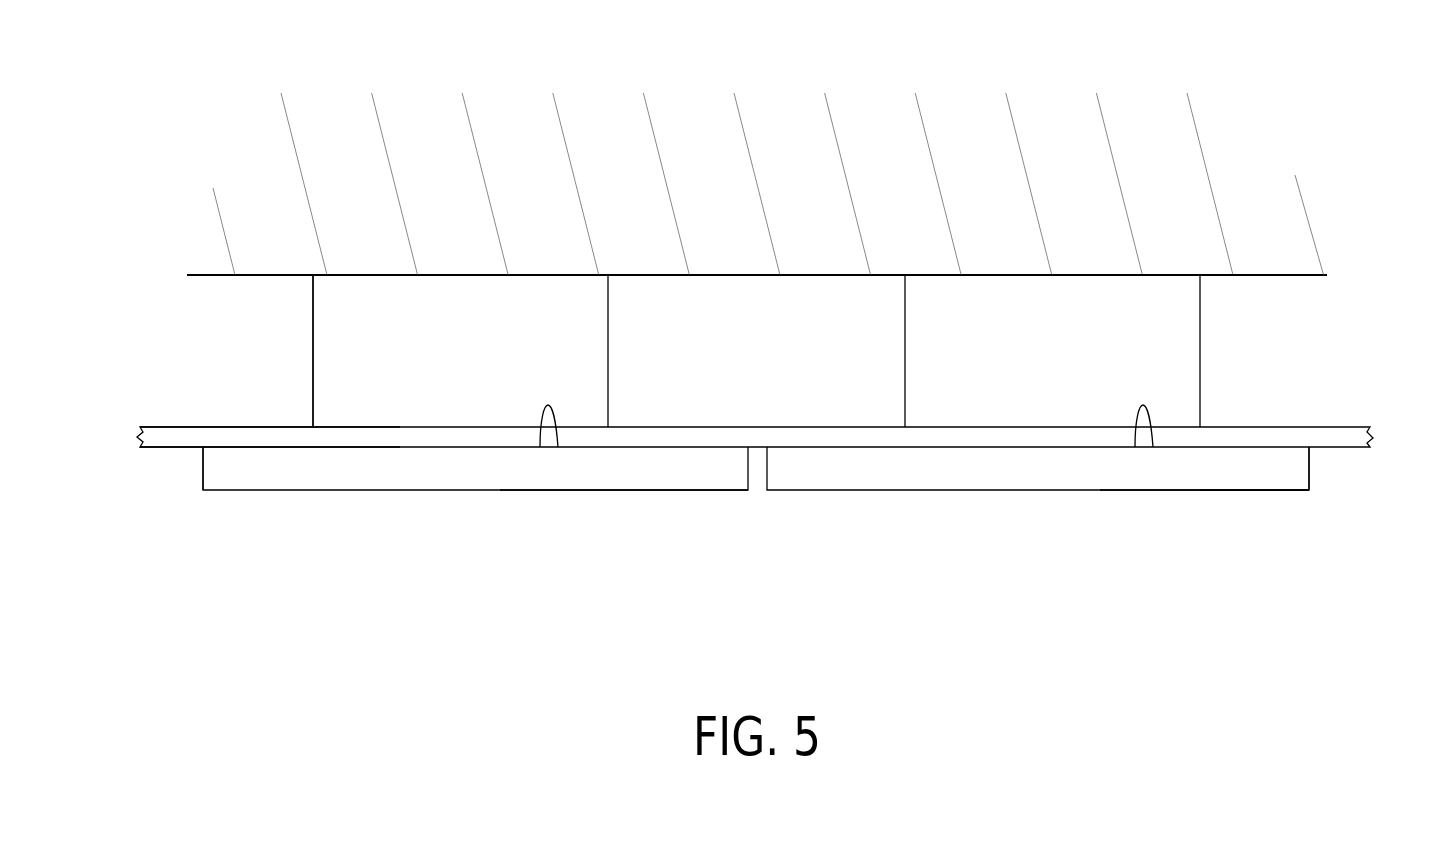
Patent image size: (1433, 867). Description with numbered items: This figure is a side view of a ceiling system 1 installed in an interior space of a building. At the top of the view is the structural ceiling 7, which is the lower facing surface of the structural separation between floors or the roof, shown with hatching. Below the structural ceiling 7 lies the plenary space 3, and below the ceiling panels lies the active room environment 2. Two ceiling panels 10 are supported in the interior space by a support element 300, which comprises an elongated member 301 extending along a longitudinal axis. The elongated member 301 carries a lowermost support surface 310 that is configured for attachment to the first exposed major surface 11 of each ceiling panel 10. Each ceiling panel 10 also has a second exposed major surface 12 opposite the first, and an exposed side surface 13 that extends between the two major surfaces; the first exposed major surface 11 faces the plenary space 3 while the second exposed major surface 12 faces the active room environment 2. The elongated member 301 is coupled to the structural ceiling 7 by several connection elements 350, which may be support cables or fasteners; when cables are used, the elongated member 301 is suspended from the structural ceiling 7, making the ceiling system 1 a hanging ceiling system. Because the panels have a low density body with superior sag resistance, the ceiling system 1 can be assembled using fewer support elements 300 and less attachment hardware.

The ceiling system 1 is at (1388, 187).
The active room environment 2 is at (1365, 555).
The plenary space 3 is at (1342, 364).
The structural ceiling 7 is at (1170, 277).
The ceiling panel 10 is at (302, 483).
The first exposed major surface 11 is at (558, 447).
The second exposed major surface 12 is at (657, 491).
The exposed side surface 13 is at (202, 467).
The support element 300 is at (208, 429).
The elongated member 301 is at (151, 430).
The lowermost support surface 310 is at (160, 450).
The connection element 350 is at (315, 347).